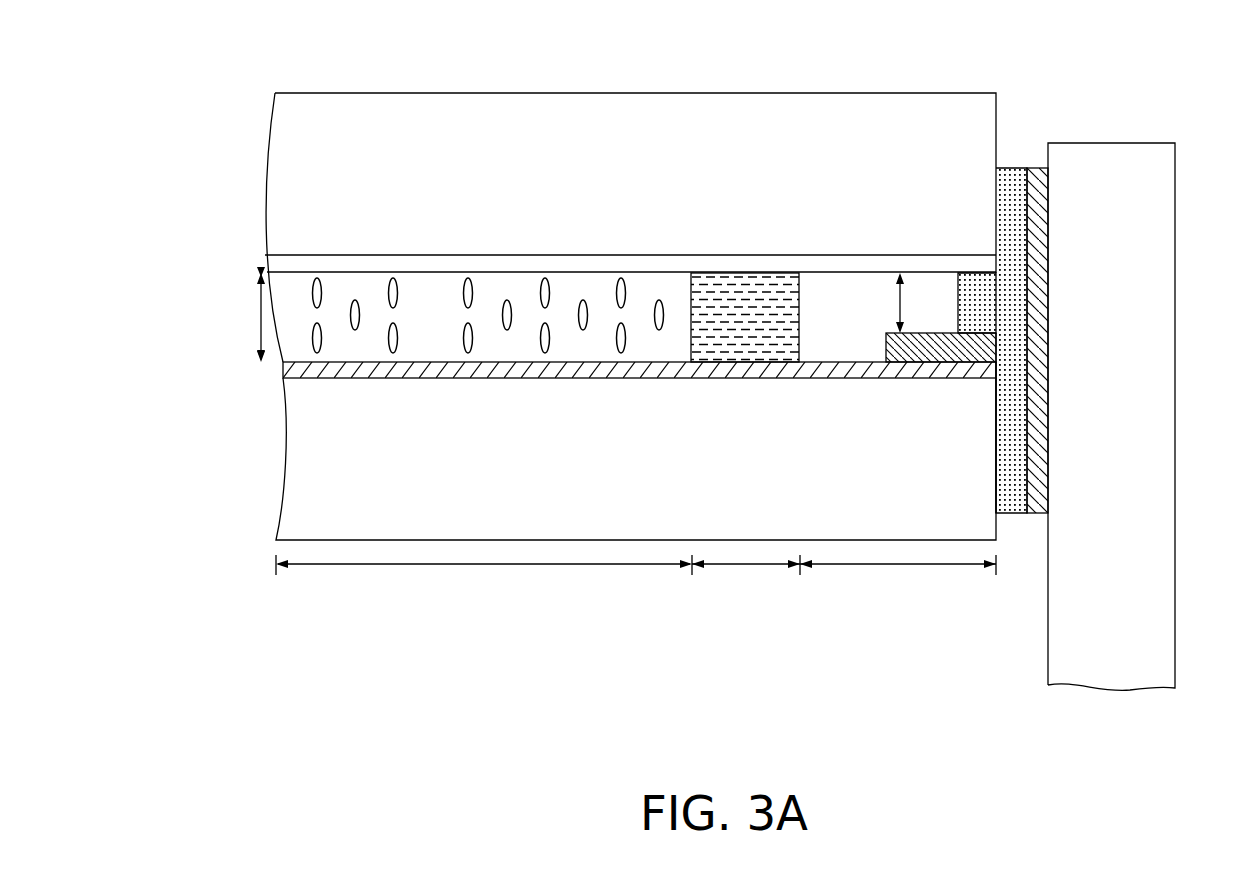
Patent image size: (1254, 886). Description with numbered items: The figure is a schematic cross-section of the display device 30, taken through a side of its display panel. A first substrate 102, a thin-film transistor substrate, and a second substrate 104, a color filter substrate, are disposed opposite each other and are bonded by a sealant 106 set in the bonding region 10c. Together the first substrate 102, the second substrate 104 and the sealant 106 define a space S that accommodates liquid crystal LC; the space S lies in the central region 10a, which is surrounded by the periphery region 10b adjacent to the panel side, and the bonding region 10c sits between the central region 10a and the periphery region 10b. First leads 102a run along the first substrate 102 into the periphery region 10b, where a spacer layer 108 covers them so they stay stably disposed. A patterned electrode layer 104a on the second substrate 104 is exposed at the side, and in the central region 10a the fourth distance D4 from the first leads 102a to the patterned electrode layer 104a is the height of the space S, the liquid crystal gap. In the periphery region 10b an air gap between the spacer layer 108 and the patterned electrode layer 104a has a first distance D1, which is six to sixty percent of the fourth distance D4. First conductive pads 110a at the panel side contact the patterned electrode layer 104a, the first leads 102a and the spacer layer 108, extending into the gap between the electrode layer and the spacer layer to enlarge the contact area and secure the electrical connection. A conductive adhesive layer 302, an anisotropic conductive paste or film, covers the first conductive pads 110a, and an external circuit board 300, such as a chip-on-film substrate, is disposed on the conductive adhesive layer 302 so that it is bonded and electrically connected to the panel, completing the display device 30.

The display device 30 is at (1240, 729).
The first substrate 102 is at (297, 458).
The first leads 102a is at (287, 368).
The second substrate 104 is at (279, 150).
The patterned electrode layer 104a is at (278, 263).
The sealant 106 is at (746, 288).
The spacer layer 108 is at (915, 340).
The first conductive pads 110a is at (1012, 176).
The external circuit board 300 is at (1130, 648).
The conductive adhesive layer 302 is at (1037, 515).
The liquid crystal LC is at (318, 290).
The space S is at (442, 331).
The first distance D1 is at (883, 303).
The fourth distance D4 is at (245, 317).
The central region 10a is at (484, 579).
The periphery region 10b is at (898, 580).
The bonding region 10c is at (746, 579).